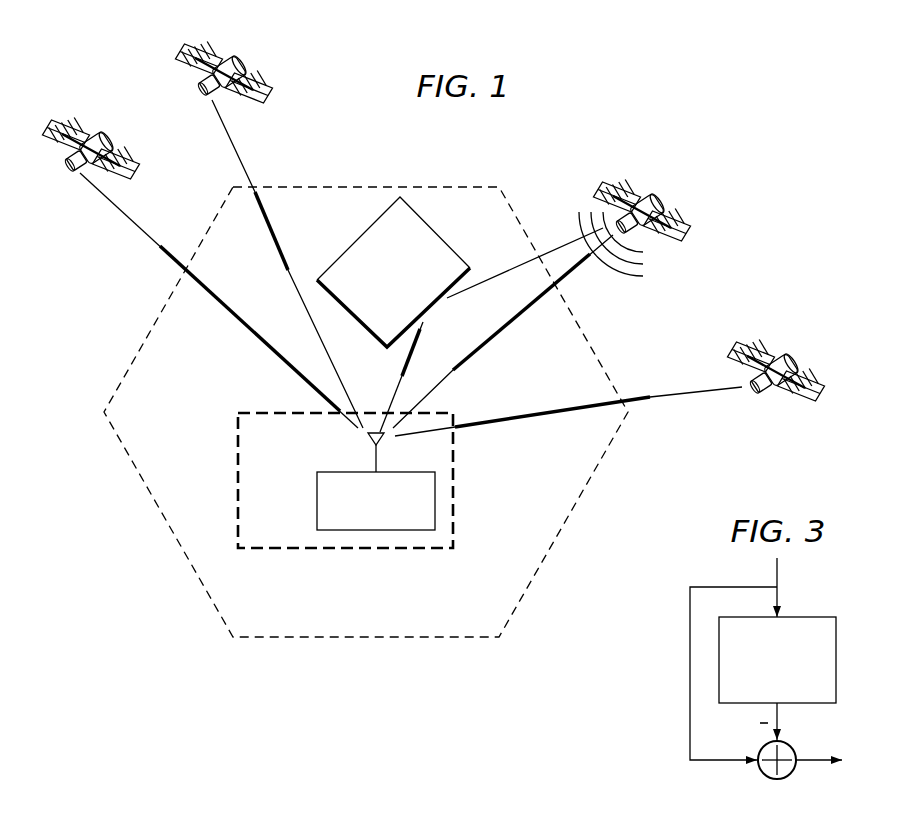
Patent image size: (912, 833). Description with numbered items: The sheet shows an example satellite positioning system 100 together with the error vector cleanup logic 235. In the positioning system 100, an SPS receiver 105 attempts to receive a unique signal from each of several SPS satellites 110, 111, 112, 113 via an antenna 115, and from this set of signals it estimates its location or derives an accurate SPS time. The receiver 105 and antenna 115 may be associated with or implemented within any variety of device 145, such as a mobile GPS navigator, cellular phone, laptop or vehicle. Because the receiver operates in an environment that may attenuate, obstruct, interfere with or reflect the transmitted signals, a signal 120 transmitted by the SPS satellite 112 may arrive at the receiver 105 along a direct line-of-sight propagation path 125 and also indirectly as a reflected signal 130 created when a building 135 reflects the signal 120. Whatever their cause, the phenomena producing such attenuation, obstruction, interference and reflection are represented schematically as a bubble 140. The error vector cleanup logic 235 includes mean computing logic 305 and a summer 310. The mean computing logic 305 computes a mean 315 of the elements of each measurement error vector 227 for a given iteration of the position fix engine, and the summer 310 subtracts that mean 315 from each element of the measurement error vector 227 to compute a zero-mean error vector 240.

In FIG. 1, the satellite positioning system 100 is at (665, 110).
In FIG. 1, the SPS receiver 105 is at (317, 498).
In FIG. 1, the SPS satellite 110 is at (100, 133).
In FIG. 1, the SPS satellite 111 is at (238, 58).
In FIG. 1, the SPS satellite 112 is at (661, 196).
In FIG. 1, the SPS satellite 113 is at (793, 358).
In FIG. 1, the antenna 115 is at (365, 438).
In FIG. 1, the signal 120 is at (658, 268).
In FIG. 1, the direct line-of-sight propagation path 125 is at (469, 367).
In FIG. 1, the reflected signal 130 is at (424, 338).
In FIG. 1, the building 135 is at (357, 239).
In FIG. 1, the bubble 140 is at (140, 481).
In FIG. 1, the device 145 is at (236, 492).
In FIG. 3, the measurement error vector 227 is at (779, 573).
In FIG. 3, the error vector cleanup logic 235 is at (697, 561).
In FIG. 3, the zero-mean error vector 240 is at (812, 762).
In FIG. 3, the mean computing logic 305 is at (735, 704).
In FIG. 3, the summer 310 is at (766, 779).
In FIG. 3, the mean 315 is at (780, 717).